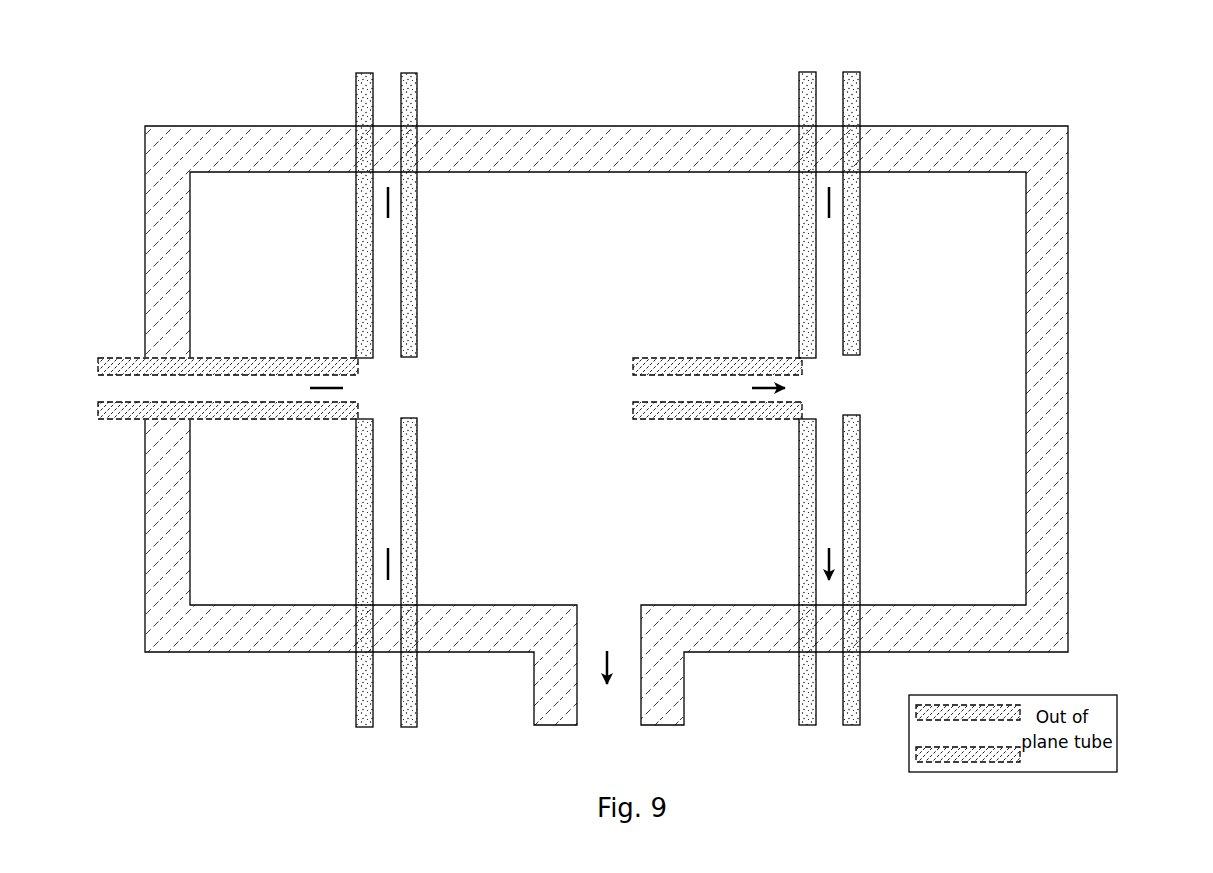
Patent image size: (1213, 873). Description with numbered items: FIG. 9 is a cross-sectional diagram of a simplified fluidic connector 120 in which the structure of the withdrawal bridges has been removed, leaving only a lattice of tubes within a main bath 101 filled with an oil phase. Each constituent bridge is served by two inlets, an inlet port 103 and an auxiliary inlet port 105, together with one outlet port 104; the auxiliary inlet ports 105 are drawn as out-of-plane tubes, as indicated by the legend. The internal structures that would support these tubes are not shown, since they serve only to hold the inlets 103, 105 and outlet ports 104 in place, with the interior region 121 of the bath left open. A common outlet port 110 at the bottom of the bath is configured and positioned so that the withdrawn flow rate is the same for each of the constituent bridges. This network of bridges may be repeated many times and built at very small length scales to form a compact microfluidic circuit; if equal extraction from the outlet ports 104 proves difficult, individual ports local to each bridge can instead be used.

The main bath 101 is at (1074, 280).
The inlet port 103 is at (417, 93).
The outlet port 104 is at (356, 688).
The auxiliary inlet port 105 is at (140, 420).
The outlet port 110 is at (610, 720).
The microfluidic device 120 is at (628, 406).
The chamber 121 is at (539, 558).